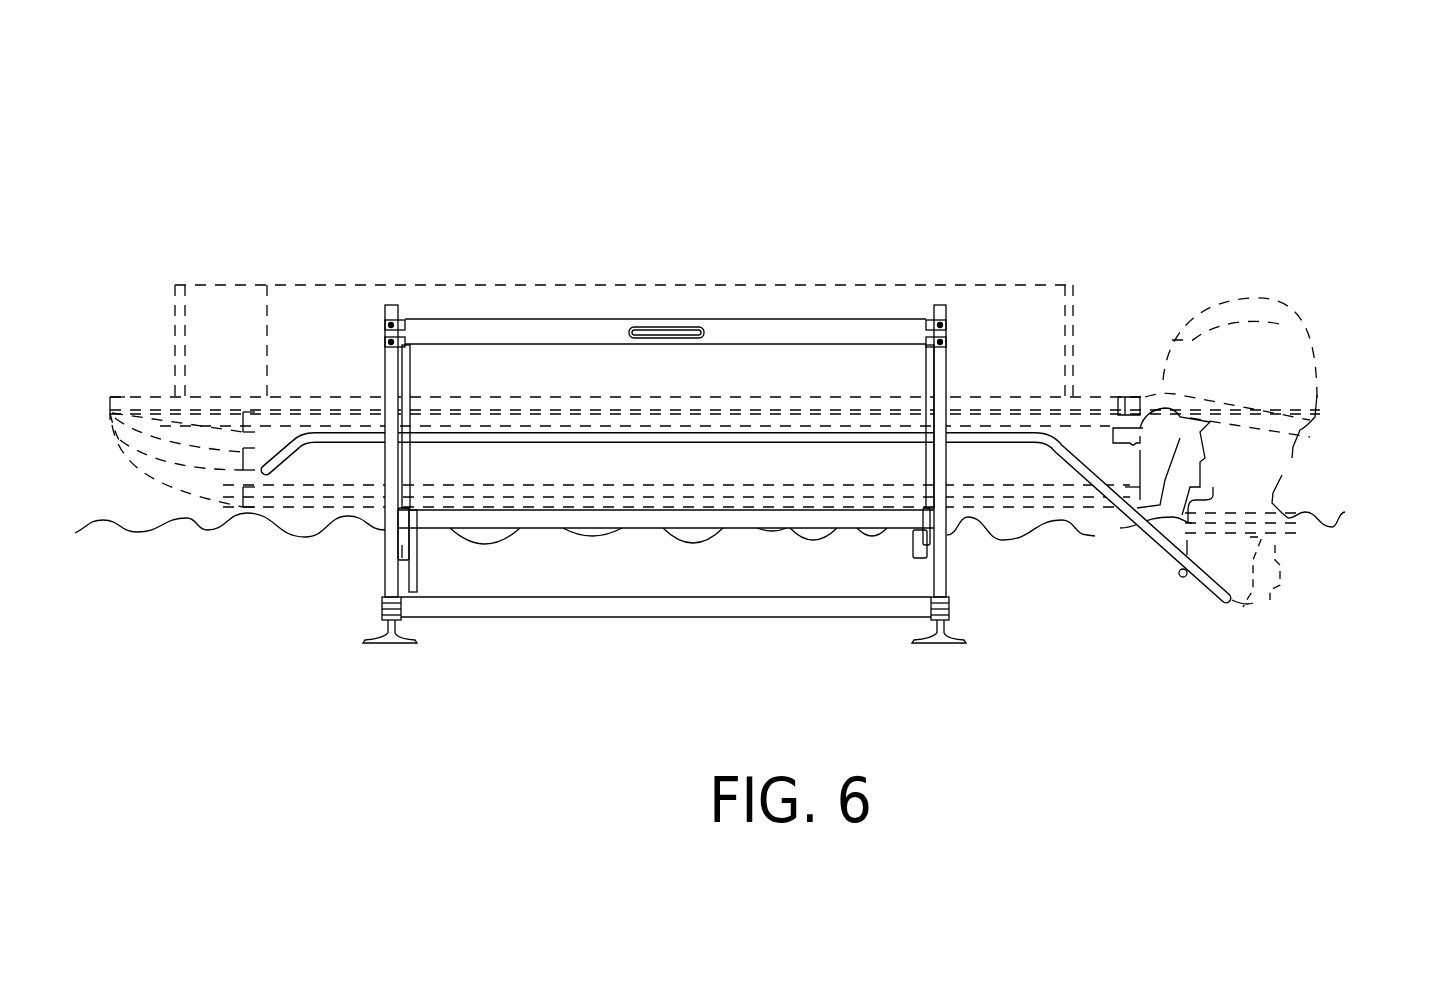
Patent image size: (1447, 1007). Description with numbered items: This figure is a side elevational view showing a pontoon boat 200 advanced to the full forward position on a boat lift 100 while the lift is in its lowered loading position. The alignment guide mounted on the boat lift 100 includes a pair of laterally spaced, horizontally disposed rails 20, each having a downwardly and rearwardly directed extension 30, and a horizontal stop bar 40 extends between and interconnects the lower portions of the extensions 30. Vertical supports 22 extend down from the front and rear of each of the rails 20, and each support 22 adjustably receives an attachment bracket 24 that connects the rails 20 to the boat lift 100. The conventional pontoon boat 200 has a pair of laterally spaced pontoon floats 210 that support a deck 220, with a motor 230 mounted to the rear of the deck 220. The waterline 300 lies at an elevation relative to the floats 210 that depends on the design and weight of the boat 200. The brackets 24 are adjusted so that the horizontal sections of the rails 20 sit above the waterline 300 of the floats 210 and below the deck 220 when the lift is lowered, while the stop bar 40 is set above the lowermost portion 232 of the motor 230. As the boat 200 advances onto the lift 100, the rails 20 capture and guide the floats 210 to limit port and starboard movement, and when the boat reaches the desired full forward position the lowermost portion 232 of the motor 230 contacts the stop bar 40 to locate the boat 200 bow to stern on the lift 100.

The boat lift 100 is at (486, 724).
The rails 20 is at (660, 434).
The vertical supports 22 is at (411, 462).
The attachment brackets 24 is at (398, 533).
The extension 30 is at (1115, 497).
The stop bar 40 is at (1185, 578).
The pontoon boat 200 is at (410, 143).
The pontoon floats 210 is at (345, 455).
The deck 220 is at (142, 403).
The motor 230 is at (1285, 302).
The lowermost portion of the boat motor 232 is at (1256, 607).
The waterline 300 is at (125, 532).